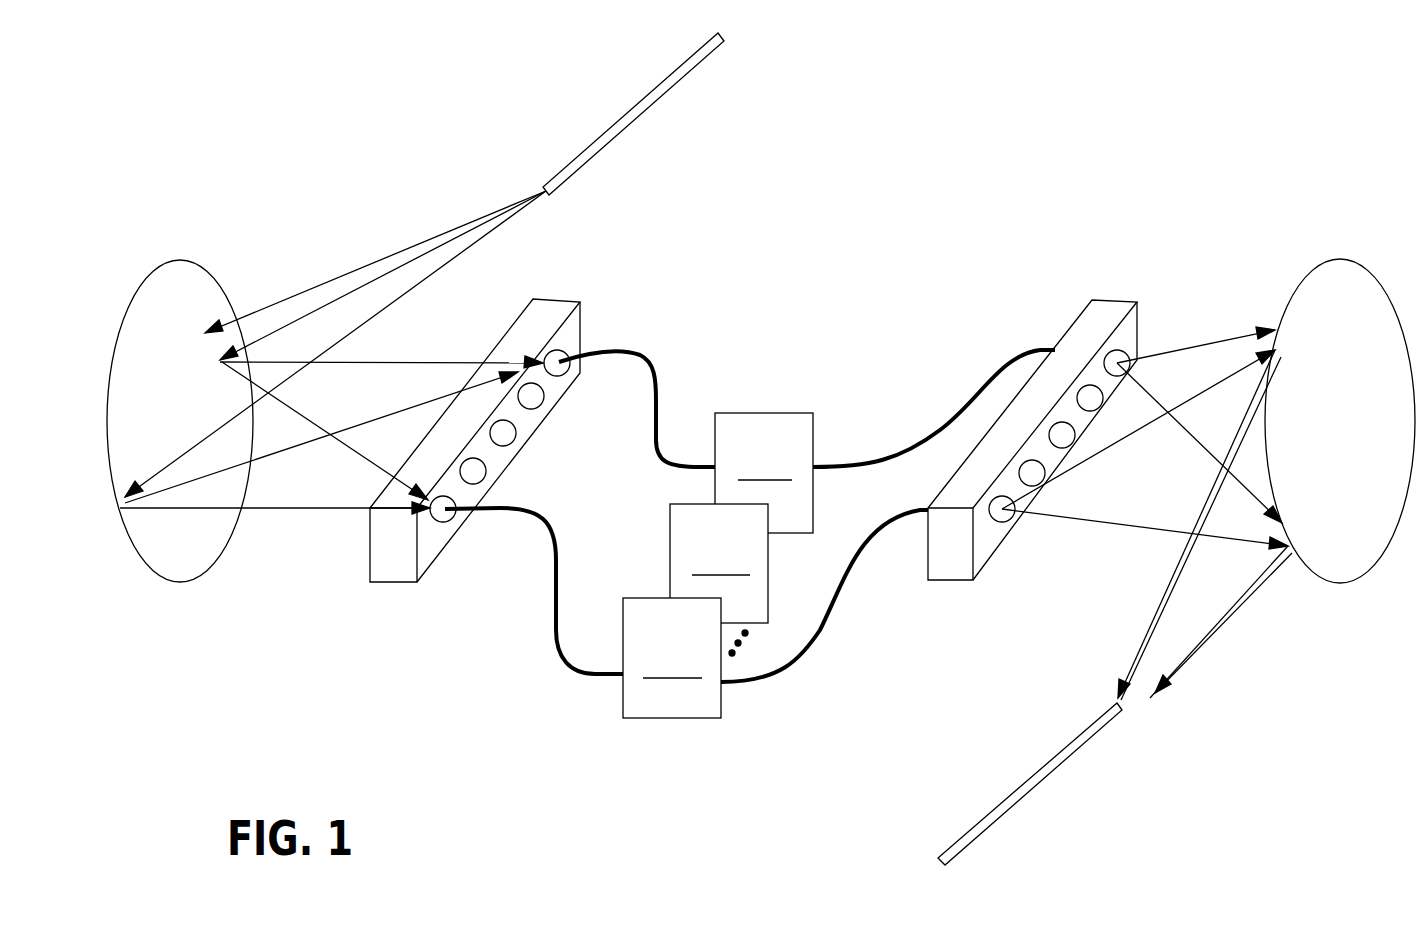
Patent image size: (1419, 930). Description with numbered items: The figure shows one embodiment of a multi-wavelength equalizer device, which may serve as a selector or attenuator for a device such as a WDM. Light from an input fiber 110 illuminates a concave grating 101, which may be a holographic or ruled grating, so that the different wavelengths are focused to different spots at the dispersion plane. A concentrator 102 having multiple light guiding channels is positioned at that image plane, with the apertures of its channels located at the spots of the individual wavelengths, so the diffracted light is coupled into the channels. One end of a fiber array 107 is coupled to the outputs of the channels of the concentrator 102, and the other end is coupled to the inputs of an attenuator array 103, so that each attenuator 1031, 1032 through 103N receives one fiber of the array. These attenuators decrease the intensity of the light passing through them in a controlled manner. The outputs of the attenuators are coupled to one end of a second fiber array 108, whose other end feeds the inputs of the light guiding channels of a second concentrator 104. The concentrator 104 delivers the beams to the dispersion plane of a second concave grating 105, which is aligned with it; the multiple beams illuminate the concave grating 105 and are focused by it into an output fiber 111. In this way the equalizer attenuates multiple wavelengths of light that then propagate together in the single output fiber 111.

The concave grating 101 is at (219, 280).
The concentrator 102 is at (581, 328).
The attenuator array 103 is at (687, 624).
The attenuator 1031 is at (764, 473).
The attenuator 1032 is at (719, 563).
The attenuator 103N is at (672, 658).
The concentrator 104 is at (1110, 298).
The concave grating 105 is at (1375, 272).
The fiber array 107 is at (553, 593).
The fiber array 108 is at (813, 647).
The input fiber 110 is at (661, 80).
The output fiber 111 is at (1030, 793).